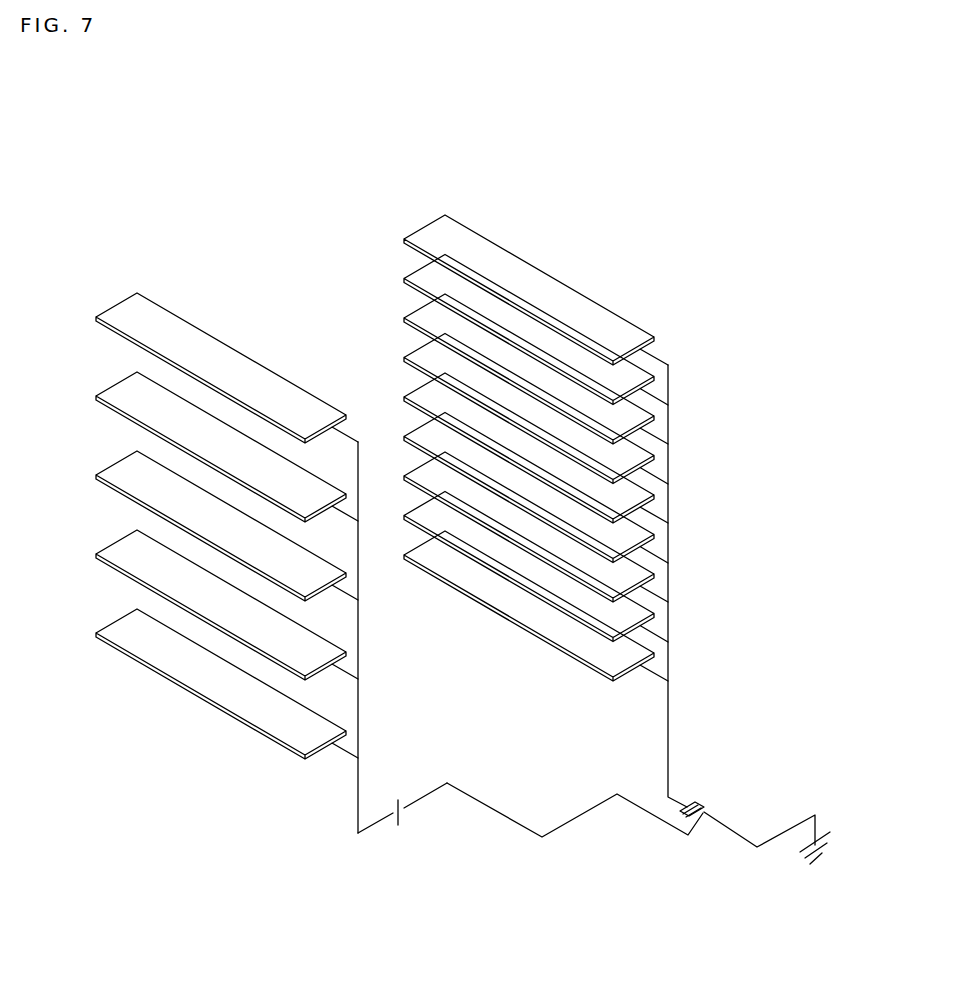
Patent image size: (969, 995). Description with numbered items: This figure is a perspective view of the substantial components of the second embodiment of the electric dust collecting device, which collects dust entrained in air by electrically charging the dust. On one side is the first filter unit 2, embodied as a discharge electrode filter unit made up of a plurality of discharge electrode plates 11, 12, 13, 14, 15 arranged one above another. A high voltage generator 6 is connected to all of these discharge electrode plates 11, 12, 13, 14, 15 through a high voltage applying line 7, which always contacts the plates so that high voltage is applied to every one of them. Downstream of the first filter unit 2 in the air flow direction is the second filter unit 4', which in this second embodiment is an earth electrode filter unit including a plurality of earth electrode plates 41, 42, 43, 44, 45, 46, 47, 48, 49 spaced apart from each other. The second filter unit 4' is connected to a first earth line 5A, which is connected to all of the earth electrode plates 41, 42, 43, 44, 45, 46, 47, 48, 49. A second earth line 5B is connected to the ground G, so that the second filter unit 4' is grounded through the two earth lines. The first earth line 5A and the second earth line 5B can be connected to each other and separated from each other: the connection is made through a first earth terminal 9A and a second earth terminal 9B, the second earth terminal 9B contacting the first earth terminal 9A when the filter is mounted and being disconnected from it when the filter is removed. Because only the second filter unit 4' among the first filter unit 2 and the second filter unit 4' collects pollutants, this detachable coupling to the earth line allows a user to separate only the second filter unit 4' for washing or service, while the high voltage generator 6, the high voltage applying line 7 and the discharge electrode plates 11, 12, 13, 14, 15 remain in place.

The first filter unit 2 is at (186, 748).
The discharge electrode plate 11 is at (108, 312).
The discharge electrode plate 12 is at (108, 391).
The discharge electrode plate 13 is at (108, 470).
The discharge electrode plate 14 is at (108, 549).
The discharge electrode plate 15 is at (108, 628).
The high voltage applying line 7 is at (358, 782).
The second filter unit 4' is at (559, 498).
The earth electrode plate 41 is at (410, 241).
The earth electrode plate 42 is at (410, 280).
The earth electrode plate 43 is at (410, 320).
The earth electrode plate 44 is at (410, 360).
The earth electrode plate 45 is at (410, 399).
The earth electrode plate 46 is at (410, 438).
The earth electrode plate 47 is at (410, 478).
The earth electrode plate 48 is at (410, 518).
The earth electrode plate 49 is at (410, 557).
The first earth line 5A is at (669, 717).
The second earth line 5B is at (757, 843).
The high voltage generator 6 is at (405, 817).
The first earth terminal 9A is at (692, 800).
The second earth terminal 9B is at (702, 803).
The ground G is at (810, 867).